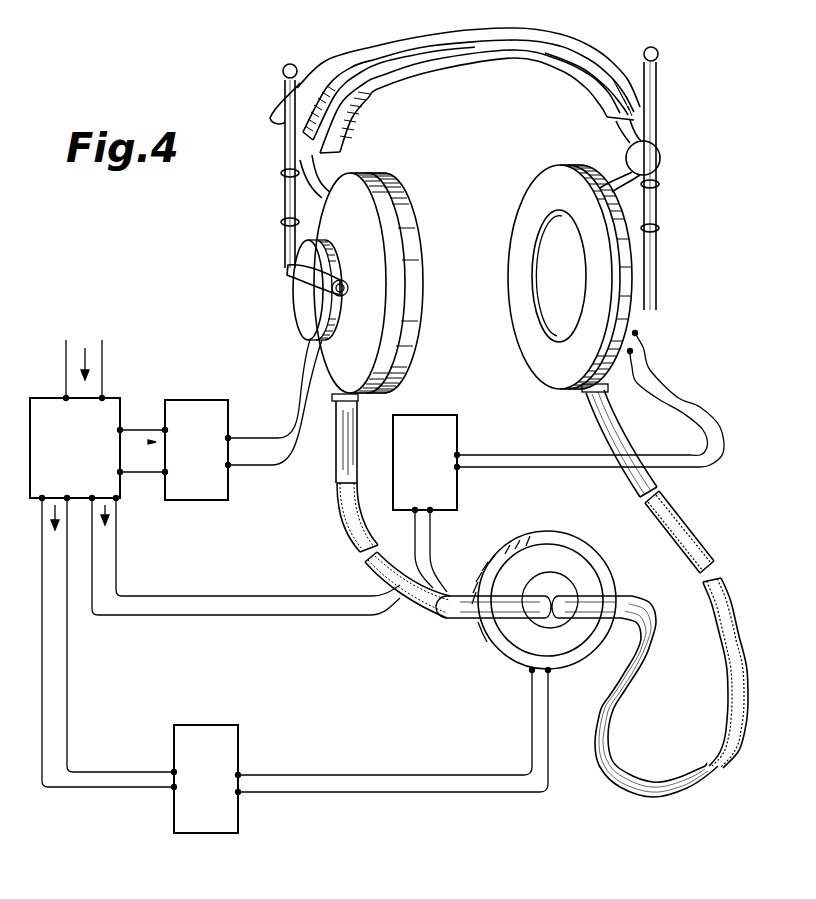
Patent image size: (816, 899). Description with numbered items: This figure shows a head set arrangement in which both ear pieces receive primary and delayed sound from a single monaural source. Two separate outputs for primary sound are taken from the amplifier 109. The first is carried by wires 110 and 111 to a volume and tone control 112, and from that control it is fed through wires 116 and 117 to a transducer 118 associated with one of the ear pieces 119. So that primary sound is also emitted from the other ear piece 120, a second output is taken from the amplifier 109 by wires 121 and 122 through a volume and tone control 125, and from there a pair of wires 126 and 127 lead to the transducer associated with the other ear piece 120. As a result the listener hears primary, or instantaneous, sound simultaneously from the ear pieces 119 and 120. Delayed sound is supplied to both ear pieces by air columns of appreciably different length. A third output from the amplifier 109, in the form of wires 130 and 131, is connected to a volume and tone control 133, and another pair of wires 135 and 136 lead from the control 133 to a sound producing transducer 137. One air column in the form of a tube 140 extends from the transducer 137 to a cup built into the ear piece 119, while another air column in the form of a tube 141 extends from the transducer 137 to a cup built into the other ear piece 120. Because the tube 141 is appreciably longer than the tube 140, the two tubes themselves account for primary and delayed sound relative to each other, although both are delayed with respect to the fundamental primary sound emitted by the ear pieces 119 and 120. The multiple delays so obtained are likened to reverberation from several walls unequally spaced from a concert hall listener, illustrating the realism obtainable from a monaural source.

The amplifier 109 is at (48, 402).
The wire 110 is at (138, 428).
The wire 111 is at (138, 474).
The volume and tone control 112 is at (190, 400).
The wire 116 is at (280, 432).
The wire 117 is at (253, 468).
The transducer 118 is at (300, 296).
The ear piece 119 is at (348, 182).
The ear piece 120 is at (544, 195).
The wire 121 is at (228, 616).
The wire 122 is at (214, 596).
The volume and tone control 125 is at (428, 418).
The wire 126 is at (700, 470).
The wire 127 is at (552, 455).
The wire 130 is at (66, 790).
The wire 131 is at (68, 742).
The volume and tone control 133 is at (205, 726).
The wire 135 is at (356, 793).
The wire 136 is at (340, 775).
The sound producing transducer 137 is at (520, 646).
The tube 140 is at (430, 614).
The tube 141 is at (643, 792).